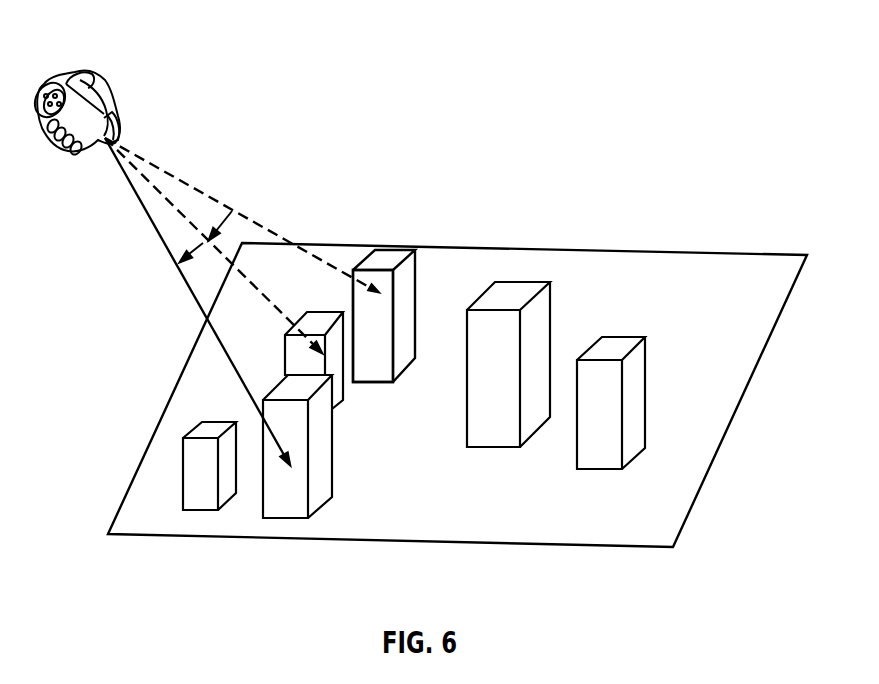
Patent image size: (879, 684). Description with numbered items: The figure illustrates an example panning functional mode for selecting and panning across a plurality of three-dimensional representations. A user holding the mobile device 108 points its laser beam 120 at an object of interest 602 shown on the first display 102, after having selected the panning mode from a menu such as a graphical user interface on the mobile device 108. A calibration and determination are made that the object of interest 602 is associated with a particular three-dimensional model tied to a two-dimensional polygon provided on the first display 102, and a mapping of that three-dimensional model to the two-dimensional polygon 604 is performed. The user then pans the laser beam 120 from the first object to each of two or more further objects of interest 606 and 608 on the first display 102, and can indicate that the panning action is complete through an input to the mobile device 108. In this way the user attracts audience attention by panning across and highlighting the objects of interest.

The first display 102 is at (749, 107).
The mobile device 108 is at (92, 101).
The laser beam 120 is at (157, 148).
The object of interest 602 is at (388, 258).
The two-dimensional polygon 604 is at (367, 383).
The object of interest 606 is at (331, 344).
The object of interest 608 is at (286, 488).